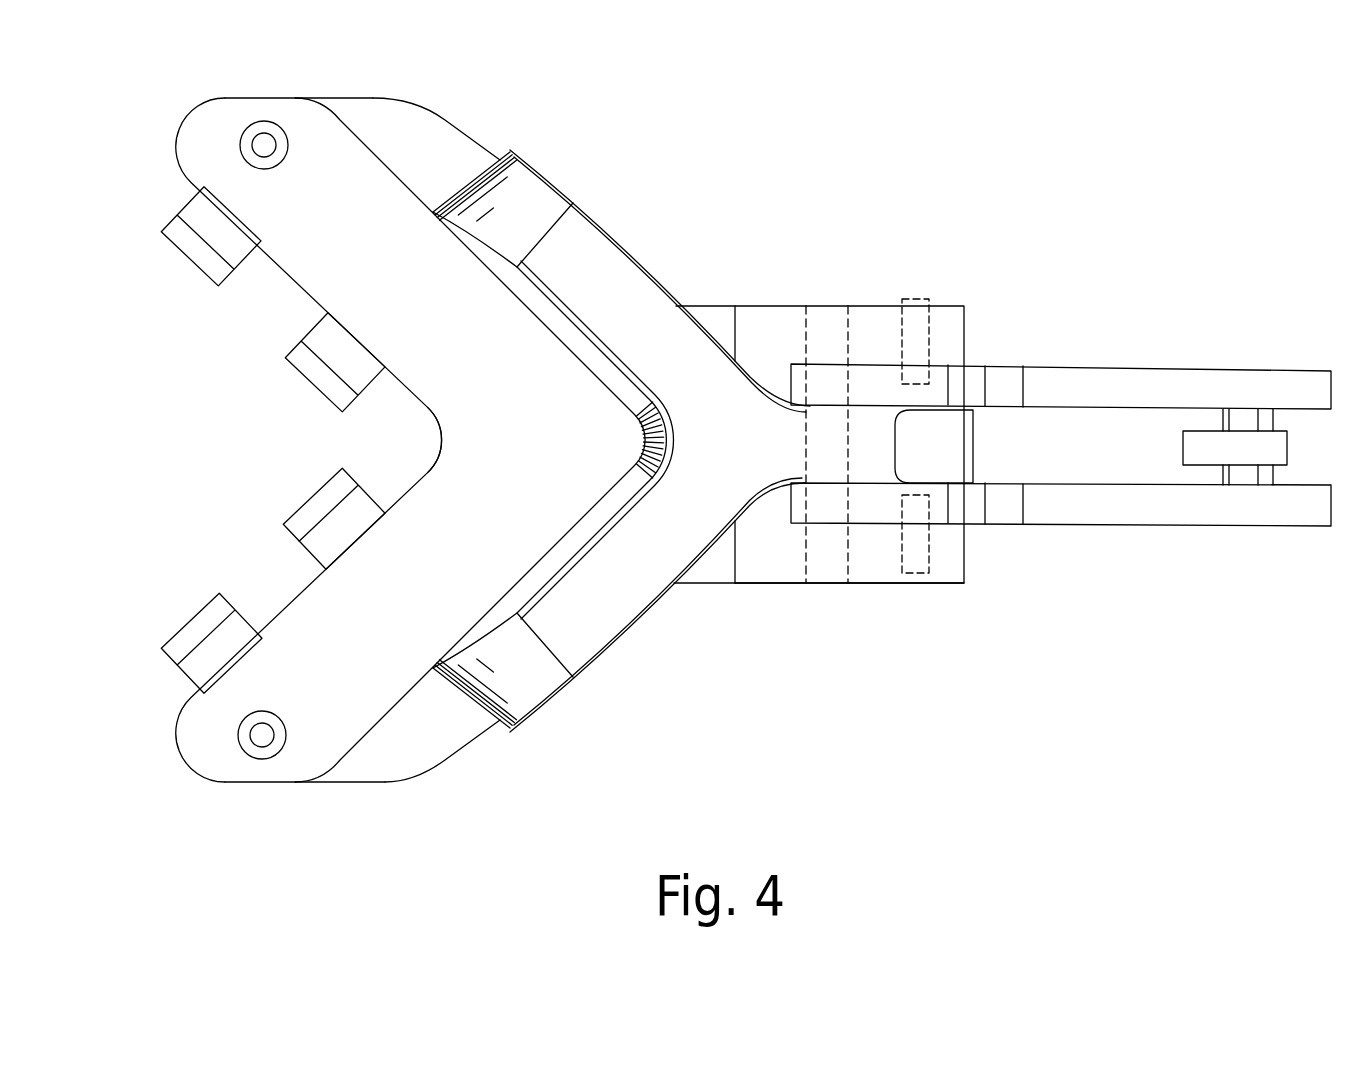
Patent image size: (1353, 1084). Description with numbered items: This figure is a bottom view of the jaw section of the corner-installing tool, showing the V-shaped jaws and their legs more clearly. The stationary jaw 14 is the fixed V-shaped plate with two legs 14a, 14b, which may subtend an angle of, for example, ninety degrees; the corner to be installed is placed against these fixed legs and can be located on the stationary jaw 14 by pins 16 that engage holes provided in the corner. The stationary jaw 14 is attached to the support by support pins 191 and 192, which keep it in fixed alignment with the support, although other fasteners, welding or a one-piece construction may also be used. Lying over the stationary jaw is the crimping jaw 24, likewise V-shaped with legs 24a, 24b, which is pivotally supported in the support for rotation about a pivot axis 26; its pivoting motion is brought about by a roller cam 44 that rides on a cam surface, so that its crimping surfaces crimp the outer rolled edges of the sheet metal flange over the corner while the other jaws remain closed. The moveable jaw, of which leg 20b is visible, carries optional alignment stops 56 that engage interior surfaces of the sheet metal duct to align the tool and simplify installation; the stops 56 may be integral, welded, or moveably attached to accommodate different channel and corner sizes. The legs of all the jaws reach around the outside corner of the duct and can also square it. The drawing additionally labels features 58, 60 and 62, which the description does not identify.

The stationary jaw 14 is at (187, 777).
The leg of stationary jaw 14a is at (183, 130).
The leg of stationary jaw 14b is at (183, 747).
The pins 16 is at (266, 150).
The leg of moveable jaw 20b is at (378, 98).
The crimping jaw 24 is at (620, 250).
The leg of crimping jaw 24a is at (512, 150).
The leg of crimping jaw 24b is at (510, 729).
The pivot axis 26 is at (832, 468).
The roller cam 44 is at (1288, 444).
The alignment stops 56 is at (180, 250).
The block bottom surface 58 is at (933, 585).
The inner apex 60 is at (442, 438).
The outer apex 62 is at (637, 418).
The support pin 191 is at (823, 306).
The support pin 192 is at (920, 298).